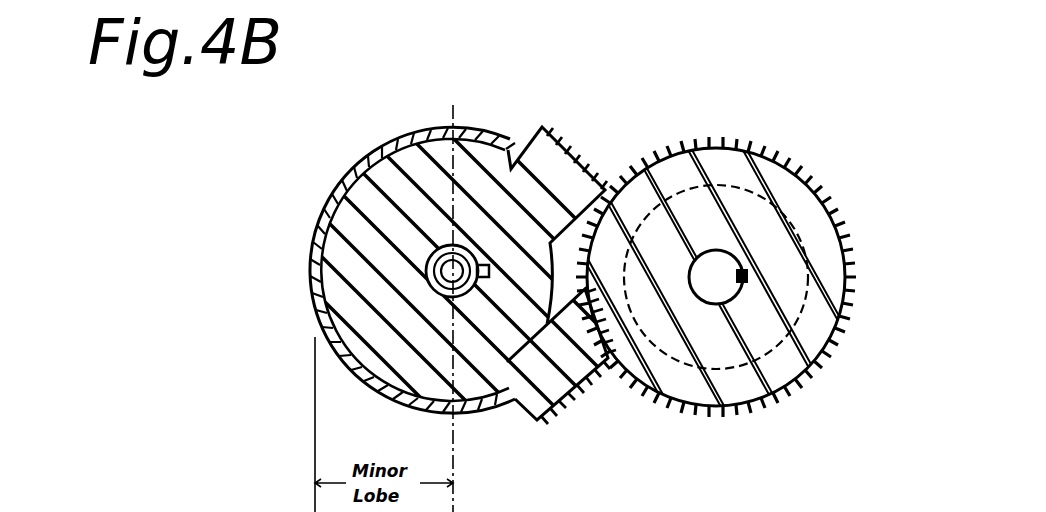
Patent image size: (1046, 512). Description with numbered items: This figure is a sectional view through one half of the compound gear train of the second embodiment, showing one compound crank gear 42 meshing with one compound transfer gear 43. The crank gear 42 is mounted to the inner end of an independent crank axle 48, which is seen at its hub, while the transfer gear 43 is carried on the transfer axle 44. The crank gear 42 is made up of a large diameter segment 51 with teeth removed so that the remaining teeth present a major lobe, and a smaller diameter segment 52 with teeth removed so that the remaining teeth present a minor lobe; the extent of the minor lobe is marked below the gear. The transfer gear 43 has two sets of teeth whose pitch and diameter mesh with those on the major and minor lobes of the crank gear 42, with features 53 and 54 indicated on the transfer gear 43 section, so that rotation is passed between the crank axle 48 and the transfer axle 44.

The compound crank gear 42 is at (343, 170).
The smaller diameter segment 52 is at (440, 187).
The crank axle 48 is at (437, 262).
The large diameter segment 51 is at (560, 172).
The compound transfer gear 43 is at (845, 223).
The pitch circle 53 is at (707, 233).
The gear section 54 is at (683, 170).
The transfer axle 44 is at (713, 273).